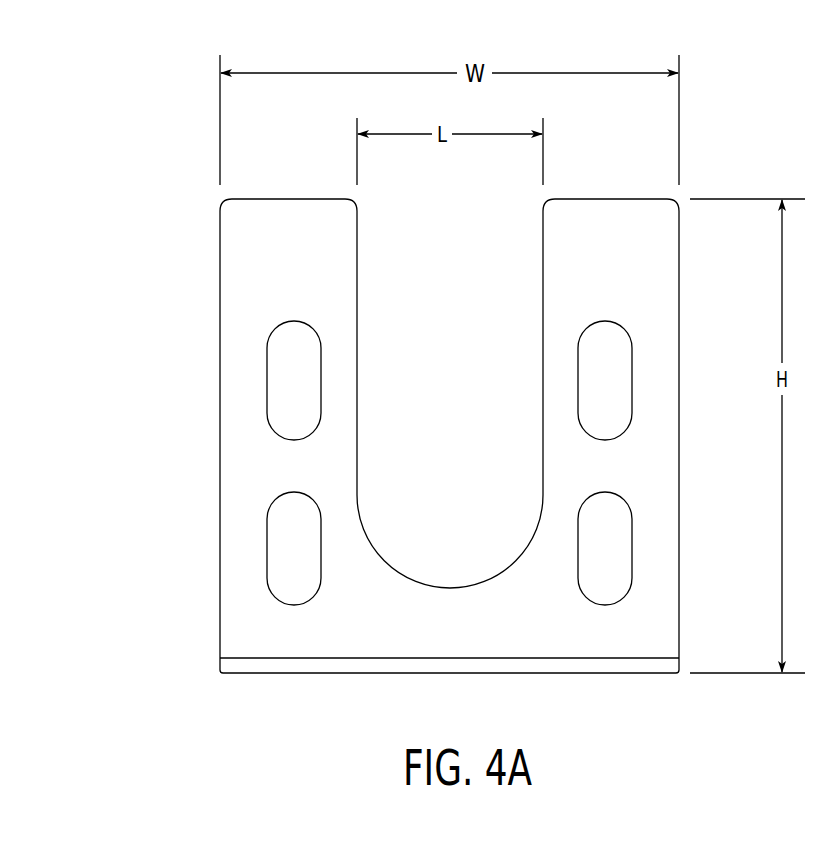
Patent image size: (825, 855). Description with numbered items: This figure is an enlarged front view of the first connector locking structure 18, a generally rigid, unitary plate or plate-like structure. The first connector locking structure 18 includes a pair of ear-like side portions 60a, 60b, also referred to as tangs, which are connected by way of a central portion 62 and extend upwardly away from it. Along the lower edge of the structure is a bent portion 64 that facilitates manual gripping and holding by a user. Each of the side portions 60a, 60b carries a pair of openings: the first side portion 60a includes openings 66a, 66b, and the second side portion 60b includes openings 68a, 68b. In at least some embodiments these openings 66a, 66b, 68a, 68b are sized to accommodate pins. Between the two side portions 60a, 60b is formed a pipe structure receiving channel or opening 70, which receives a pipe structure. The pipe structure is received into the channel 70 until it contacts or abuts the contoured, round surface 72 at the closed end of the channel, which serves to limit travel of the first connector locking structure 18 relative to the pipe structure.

The first connector locking structure 18 is at (454, 435).
The side portion 60a is at (323, 266).
The side portion 60b is at (628, 266).
The central portion 62 is at (460, 636).
The bent portion 64 is at (458, 667).
The opening 66a is at (296, 389).
The opening 66b is at (297, 552).
The opening 68a is at (611, 389).
The opening 68b is at (611, 552).
The pipe structure receiving channel 70 is at (457, 233).
The contoured surface 72 is at (487, 580).